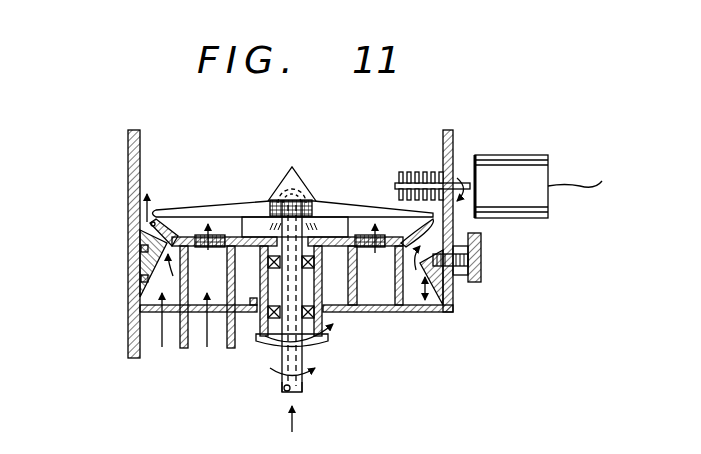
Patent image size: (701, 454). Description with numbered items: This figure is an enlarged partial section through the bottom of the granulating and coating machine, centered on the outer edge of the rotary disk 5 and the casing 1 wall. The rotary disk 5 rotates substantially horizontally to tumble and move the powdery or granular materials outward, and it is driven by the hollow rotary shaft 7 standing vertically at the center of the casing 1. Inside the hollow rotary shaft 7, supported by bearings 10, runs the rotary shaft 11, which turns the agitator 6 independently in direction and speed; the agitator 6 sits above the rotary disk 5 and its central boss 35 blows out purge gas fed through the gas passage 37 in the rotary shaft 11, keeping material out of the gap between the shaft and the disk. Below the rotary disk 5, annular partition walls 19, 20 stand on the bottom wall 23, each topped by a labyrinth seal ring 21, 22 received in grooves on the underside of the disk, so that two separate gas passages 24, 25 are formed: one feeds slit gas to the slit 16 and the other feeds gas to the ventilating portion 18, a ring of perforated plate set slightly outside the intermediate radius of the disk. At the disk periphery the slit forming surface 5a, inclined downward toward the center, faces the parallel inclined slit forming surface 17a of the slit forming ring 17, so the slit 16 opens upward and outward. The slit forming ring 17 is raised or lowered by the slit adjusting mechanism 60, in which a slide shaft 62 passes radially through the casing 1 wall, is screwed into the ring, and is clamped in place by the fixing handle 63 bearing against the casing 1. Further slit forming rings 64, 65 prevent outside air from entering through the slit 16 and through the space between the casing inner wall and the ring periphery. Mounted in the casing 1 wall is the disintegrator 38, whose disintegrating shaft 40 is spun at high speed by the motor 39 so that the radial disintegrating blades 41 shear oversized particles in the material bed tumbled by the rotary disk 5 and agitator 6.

The casing 1 is at (452, 140).
The rotary disk 5 is at (245, 238).
The slit forming surface 5a is at (148, 230).
The agitator 6 is at (330, 210).
The hollow rotary shaft 7 is at (265, 345).
The bearings 10 is at (330, 320).
The rotary shaft 11 is at (300, 388).
The slit 16 is at (145, 249).
The slit forming ring 17 is at (140, 275).
The slit forming surface 17a is at (145, 278).
The ventilating portion 18 is at (198, 236).
The annular partition wall 19 is at (356, 270).
The annular partition wall 20 is at (402, 280).
The seal ring 21 is at (340, 242).
The seal ring 22 is at (372, 245).
The bottom wall 23 is at (437, 300).
The gas passage 24 is at (150, 308).
The gas passage 25 is at (207, 300).
The boss 35 is at (276, 200).
The gas passage 37 is at (288, 394).
The disintegrator 38 is at (534, 153).
The motor 39 is at (589, 182).
The disintegrating shaft 40 is at (470, 186).
The disintegrating blades 41 is at (414, 178).
The slit adjusting mechanism 60 is at (475, 268).
The slide shaft 62 is at (462, 265).
The fixing handle 63 is at (488, 257).
The slit forming ring 64 is at (432, 228).
The slit forming ring 65 is at (452, 293).